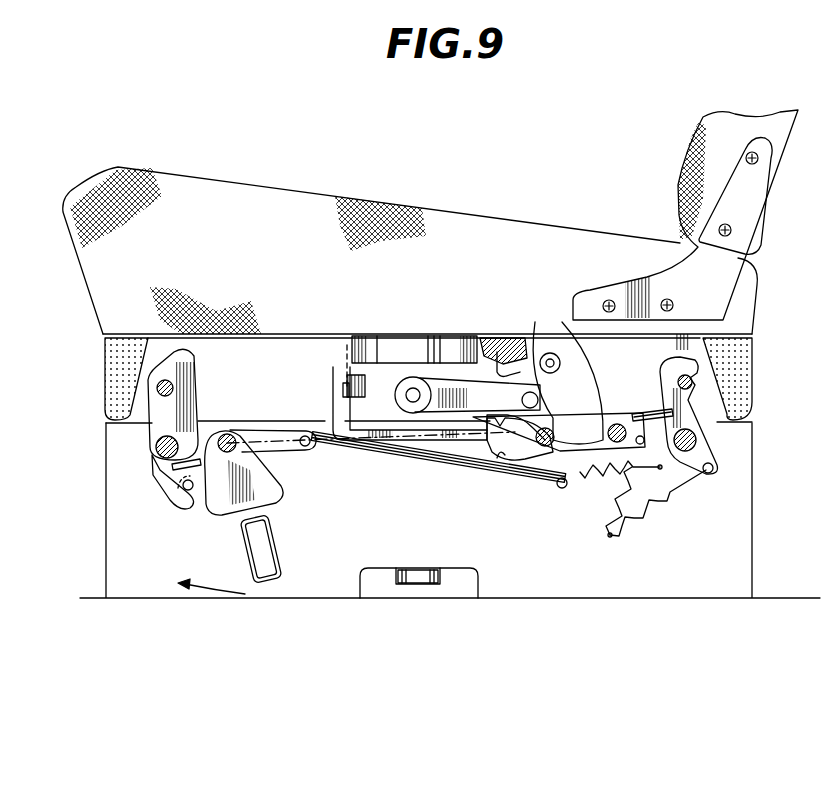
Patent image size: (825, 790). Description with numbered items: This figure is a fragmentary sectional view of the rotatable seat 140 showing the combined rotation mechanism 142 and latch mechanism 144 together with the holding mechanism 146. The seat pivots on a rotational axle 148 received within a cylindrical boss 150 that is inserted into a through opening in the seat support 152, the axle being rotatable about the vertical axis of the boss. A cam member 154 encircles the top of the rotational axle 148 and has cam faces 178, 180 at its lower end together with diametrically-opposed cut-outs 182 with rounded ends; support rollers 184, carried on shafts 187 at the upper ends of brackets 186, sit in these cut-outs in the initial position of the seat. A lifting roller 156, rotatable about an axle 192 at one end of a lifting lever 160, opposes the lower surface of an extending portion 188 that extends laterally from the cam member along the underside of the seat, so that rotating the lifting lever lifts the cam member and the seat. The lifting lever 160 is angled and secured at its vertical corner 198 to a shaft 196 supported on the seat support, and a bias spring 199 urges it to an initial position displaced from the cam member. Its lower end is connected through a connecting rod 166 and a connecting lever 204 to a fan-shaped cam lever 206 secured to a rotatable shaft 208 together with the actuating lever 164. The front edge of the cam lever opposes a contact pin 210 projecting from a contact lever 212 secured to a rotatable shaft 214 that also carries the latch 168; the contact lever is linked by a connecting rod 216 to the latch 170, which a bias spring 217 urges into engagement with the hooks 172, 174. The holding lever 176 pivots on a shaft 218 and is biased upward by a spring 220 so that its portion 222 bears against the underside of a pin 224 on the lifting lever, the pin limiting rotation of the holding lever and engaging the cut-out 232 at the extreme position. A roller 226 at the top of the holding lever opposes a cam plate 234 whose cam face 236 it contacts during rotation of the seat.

The rotatable seat 140 is at (489, 203).
The rotation mechanism 142 is at (457, 323).
The latch mechanism 144 is at (206, 380).
The holding mechanism 146 is at (605, 392).
The rotational axle 148 is at (415, 580).
The cylindrical boss 150 is at (345, 415).
The seat support 152 is at (746, 483).
The cam member 154 is at (360, 336).
The lifting roller 156 is at (418, 336).
The lifting lever 160 is at (460, 422).
The actuating lever 164 is at (240, 522).
The connecting rod 166 is at (422, 462).
The latch 168 is at (187, 410).
The latch 170 is at (692, 405).
The hook 172 is at (157, 388).
The hook 174 is at (700, 382).
The holding lever 176 is at (570, 489).
The cam face 178 is at (388, 340).
The cam face 180 is at (497, 352).
The cut-out 182 is at (347, 340).
The support roller 184 is at (495, 352).
The bracket 186 is at (330, 385).
The shaft 187 is at (300, 413).
The extending portion 188 is at (436, 336).
The axle 192 is at (408, 407).
The shaft 196 is at (536, 335).
The vertical corner 198 is at (563, 345).
The bias spring 199 is at (602, 482).
The connecting lever 204 is at (329, 460).
The fan-shaped cam lever 206 is at (270, 492).
The rotatable shaft 208 is at (233, 438).
The contact pin 210 is at (185, 490).
The contact lever 212 is at (175, 478).
The rotatable shaft 214 is at (153, 447).
The connecting rod 216 is at (172, 467).
The bias spring 217 is at (668, 505).
The shaft 218 is at (618, 430).
The spring 220 is at (704, 473).
The portion 222 is at (545, 447).
The pin 224 is at (503, 468).
The roller 226 is at (551, 352).
The cut-out 232 is at (505, 460).
The cam plate 234 is at (487, 338).
The cam face 236 is at (508, 400).